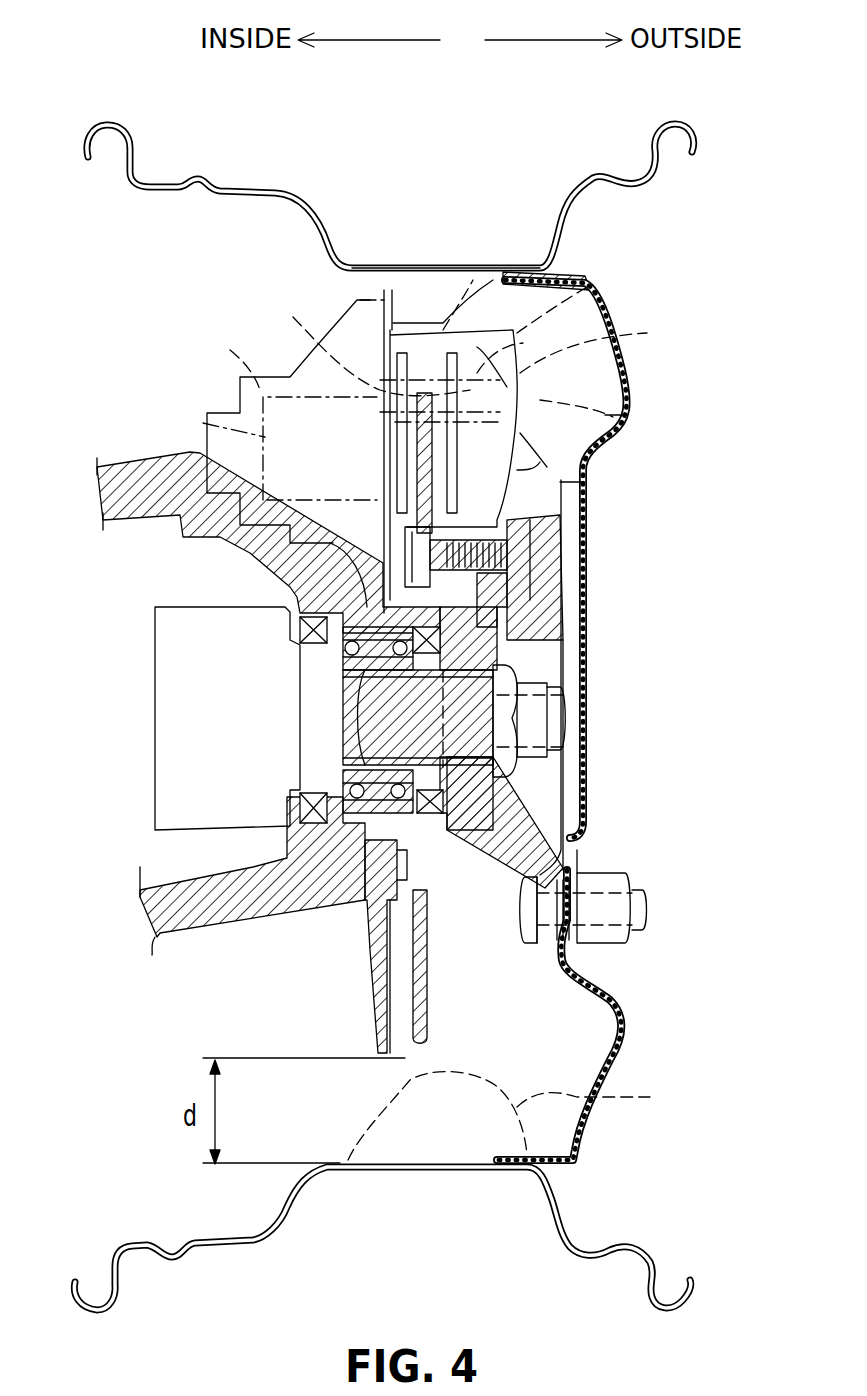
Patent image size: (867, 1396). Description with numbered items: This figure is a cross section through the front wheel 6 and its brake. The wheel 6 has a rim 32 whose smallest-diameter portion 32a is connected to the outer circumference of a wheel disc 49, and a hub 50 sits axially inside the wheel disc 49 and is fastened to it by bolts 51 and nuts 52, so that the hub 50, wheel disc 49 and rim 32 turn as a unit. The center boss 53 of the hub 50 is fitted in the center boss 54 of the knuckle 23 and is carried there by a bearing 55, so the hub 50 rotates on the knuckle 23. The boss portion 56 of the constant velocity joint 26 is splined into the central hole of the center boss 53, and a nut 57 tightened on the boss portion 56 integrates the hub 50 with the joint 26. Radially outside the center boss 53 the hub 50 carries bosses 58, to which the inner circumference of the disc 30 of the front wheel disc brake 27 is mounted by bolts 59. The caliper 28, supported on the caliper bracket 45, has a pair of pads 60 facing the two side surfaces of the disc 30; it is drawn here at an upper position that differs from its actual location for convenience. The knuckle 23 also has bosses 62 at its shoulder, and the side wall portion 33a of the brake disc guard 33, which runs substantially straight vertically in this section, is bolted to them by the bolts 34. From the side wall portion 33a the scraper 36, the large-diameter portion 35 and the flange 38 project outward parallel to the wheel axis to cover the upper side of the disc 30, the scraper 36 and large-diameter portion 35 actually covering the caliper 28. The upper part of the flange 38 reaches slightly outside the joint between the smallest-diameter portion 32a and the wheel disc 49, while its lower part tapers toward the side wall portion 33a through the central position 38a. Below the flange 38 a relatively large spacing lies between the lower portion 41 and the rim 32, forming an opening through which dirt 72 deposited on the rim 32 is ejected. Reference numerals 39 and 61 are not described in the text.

The front wheel 6 is at (190, 142).
The knuckle 23 is at (133, 457).
The constant velocity joint 26 is at (170, 692).
The front wheel disc brake 27 is at (283, 373).
The caliper 28 is at (230, 350).
The disc 30 is at (400, 455).
The rim 32 is at (232, 192).
The smallest-diameter portion 32a is at (357, 265).
The brake disc guard 33 is at (369, 1021).
The side wall portion 33a is at (367, 947).
The bolts 34 is at (405, 877).
The large-diameter portion 35 is at (578, 292).
The scraper 36 is at (625, 417).
The flange 38 is at (463, 290).
The central position 38a is at (522, 465).
The caliper mounting bolt 39 is at (387, 287).
The lower portion 41 is at (427, 1005).
The caliper bracket 45 is at (560, 483).
The wheel disc 49 is at (627, 362).
The hub 50 is at (560, 783).
The bolts 51 is at (585, 848).
The nuts 52 is at (610, 943).
The center boss 53 is at (565, 632).
The center boss 54 is at (565, 607).
The bearing 55 is at (345, 655).
The boss portion 56 is at (560, 730).
The nut 57 is at (560, 680).
The bosses 58 is at (470, 500).
The bolts 59 is at (560, 535).
The pads 60 is at (640, 331).
The tie rod 61 is at (203, 423).
The bosses 62 is at (355, 908).
The dirt 72 is at (592, 1099).